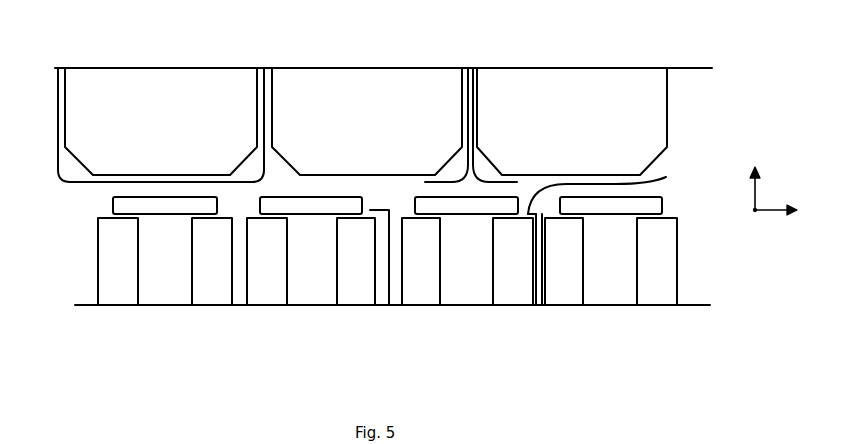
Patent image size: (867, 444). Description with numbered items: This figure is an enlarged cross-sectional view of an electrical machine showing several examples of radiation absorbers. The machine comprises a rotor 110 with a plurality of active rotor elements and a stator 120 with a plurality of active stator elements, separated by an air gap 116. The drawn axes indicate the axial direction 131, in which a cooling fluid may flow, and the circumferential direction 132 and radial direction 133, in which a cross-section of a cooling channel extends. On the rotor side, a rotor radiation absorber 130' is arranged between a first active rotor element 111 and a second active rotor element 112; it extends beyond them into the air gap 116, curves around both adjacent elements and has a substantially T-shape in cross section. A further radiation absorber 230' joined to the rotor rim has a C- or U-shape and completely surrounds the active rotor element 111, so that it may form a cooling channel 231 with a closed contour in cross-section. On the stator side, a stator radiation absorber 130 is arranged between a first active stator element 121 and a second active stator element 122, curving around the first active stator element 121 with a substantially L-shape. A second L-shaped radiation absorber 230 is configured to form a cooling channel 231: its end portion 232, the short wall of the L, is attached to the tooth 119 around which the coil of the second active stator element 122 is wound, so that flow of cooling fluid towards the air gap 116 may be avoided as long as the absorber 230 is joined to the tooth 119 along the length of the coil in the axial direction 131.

The rotor 110 is at (289, 56).
The first active rotor element 111 is at (298, 113).
The second active rotor element 112 is at (658, 134).
The air gap 116 is at (94, 191).
The tooth 119 is at (650, 204).
The stator 120 is at (685, 327).
The first active stator element 121 is at (364, 284).
The second active stator element 122 is at (516, 286).
The stator radiation absorber 130 is at (393, 273).
The rotor radiation absorber 130' is at (479, 105).
The axial direction 131 is at (754, 210).
The circumferential direction 132 is at (772, 212).
The radial direction 133 is at (757, 204).
The radiation absorber 230 is at (557, 277).
The radiation absorber 230' is at (148, 105).
The cooling channel 231 is at (263, 70).
The end portion 232 is at (609, 188).